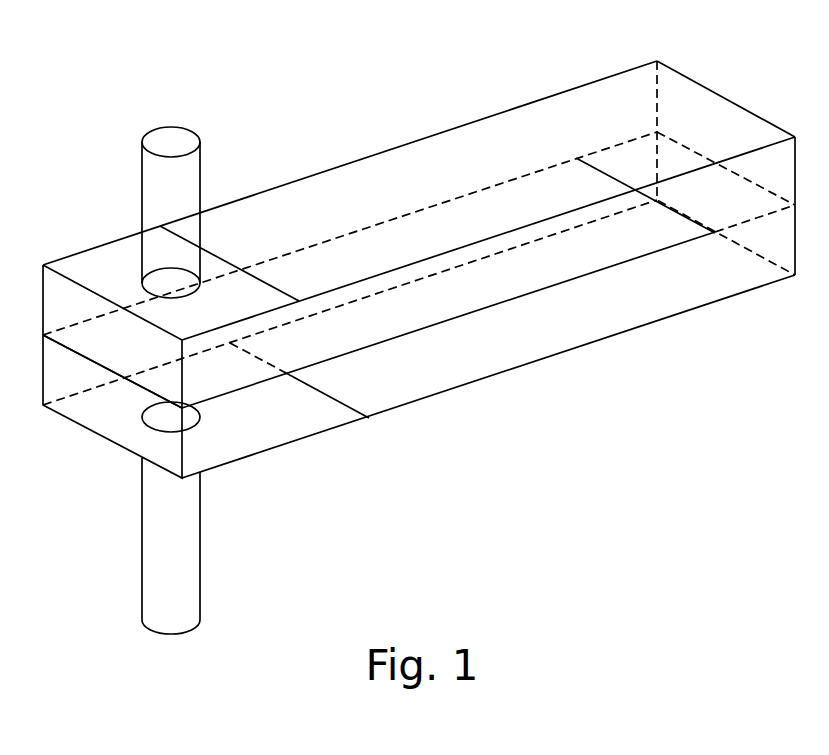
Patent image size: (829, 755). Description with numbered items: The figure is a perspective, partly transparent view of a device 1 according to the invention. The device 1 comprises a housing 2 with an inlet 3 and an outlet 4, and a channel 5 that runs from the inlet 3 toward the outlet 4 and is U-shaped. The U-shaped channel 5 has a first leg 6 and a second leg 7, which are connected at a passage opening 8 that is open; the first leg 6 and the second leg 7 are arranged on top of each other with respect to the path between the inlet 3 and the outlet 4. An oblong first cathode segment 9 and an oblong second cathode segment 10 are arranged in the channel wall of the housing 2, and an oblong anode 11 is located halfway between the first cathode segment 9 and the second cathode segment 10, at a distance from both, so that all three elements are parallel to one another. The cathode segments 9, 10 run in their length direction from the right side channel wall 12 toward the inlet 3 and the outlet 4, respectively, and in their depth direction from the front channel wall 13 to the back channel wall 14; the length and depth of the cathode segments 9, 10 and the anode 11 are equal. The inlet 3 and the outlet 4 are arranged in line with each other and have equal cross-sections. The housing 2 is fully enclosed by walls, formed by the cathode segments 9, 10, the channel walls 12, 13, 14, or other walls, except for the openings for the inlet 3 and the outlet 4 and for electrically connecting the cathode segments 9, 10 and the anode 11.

The device 1 is at (96, 84).
The housing 2 is at (82, 428).
The inlet 3 is at (168, 617).
The outlet 4 is at (162, 197).
The channel 5 is at (597, 125).
The first leg 6 is at (427, 357).
The second leg 7 is at (385, 167).
The passage opening 8 is at (712, 205).
The first cathode segment 9 is at (712, 280).
The second cathode segment 10 is at (520, 123).
The anode 11 is at (308, 340).
The right side channel wall 12 is at (717, 115).
The front channel wall 13 is at (508, 340).
The back channel wall 14 is at (307, 198).